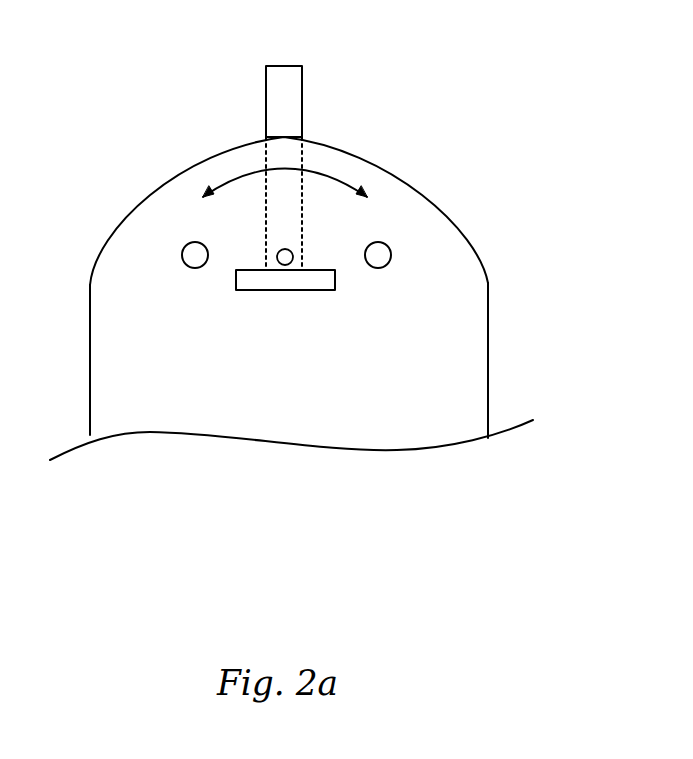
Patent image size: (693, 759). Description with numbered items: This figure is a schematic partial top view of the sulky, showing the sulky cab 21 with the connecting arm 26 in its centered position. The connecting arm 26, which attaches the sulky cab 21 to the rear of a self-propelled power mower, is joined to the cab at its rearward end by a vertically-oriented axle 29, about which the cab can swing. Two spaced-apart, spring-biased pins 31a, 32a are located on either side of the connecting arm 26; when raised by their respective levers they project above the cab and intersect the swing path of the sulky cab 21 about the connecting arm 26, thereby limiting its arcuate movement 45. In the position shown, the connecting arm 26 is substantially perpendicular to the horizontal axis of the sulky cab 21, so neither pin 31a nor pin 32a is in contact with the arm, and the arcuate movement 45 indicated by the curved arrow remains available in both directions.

The sulky cab 21 is at (472, 235).
The connecting arm 26 is at (285, 97).
The vertically-oriented axle 29 is at (285, 232).
The pin 31a is at (195, 268).
The pin 32a is at (378, 268).
The arcuate movement 45 is at (322, 165).